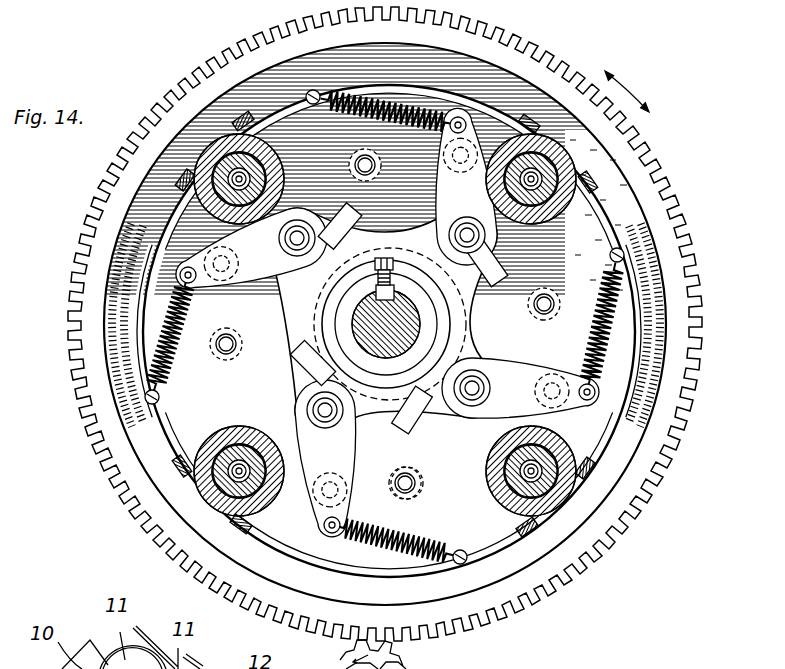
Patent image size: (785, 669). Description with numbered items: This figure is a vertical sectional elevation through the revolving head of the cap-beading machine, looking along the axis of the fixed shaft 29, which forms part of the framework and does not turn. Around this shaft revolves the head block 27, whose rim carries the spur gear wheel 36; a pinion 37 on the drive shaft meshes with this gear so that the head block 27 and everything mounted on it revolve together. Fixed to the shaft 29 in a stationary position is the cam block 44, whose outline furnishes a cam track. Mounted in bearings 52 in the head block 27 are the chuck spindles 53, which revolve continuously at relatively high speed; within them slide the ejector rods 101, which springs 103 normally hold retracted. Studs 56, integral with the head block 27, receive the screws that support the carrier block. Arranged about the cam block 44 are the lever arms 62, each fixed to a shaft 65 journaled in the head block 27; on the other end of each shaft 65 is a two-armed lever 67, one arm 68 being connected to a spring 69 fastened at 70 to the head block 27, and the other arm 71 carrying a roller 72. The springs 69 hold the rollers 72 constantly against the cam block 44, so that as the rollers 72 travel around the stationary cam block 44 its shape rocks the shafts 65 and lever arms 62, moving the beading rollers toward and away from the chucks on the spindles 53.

The head block 27 is at (595, 213).
The fixed shaft 29 is at (376, 352).
The spur gear wheel 36 is at (557, 67).
The pinion 37 is at (433, 653).
The cam block 44 is at (384, 322).
The bearings 52 is at (248, 118).
The chuck spindles 53 is at (218, 152).
The studs 56 is at (423, 498).
The lever arms 62 is at (218, 263).
The shafts 65 is at (470, 465).
The levers 67 is at (400, 205).
The arm 68 is at (461, 119).
The springs 69 is at (395, 105).
The fastening point 70 is at (312, 90).
The arm 71 is at (293, 217).
The rollers 72 is at (280, 238).
The ejector rods 101 is at (543, 187).
The springs 103 is at (534, 150).